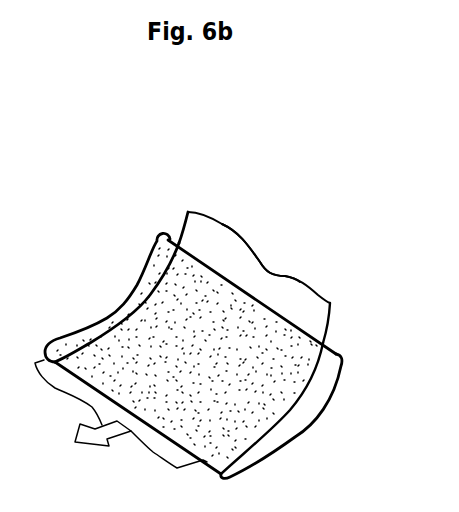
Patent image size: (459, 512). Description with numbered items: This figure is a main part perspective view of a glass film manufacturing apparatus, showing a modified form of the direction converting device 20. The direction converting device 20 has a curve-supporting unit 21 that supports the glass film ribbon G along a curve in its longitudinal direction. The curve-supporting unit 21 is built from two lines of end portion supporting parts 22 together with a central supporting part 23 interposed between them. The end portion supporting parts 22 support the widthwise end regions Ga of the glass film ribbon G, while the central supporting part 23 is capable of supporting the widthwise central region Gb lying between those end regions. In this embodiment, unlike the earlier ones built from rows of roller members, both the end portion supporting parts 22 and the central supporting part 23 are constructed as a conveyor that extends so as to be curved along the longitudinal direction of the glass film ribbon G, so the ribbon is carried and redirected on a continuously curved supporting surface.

The direction converting device 20 is at (126, 217).
The curve-supporting unit 21 is at (330, 416).
The end portion supporting part 22 is at (117, 306).
The central supporting part 23 is at (181, 413).
The glass film ribbon G is at (300, 278).
The widthwise end region Ga is at (198, 227).
The widthwise central region Gb is at (252, 283).